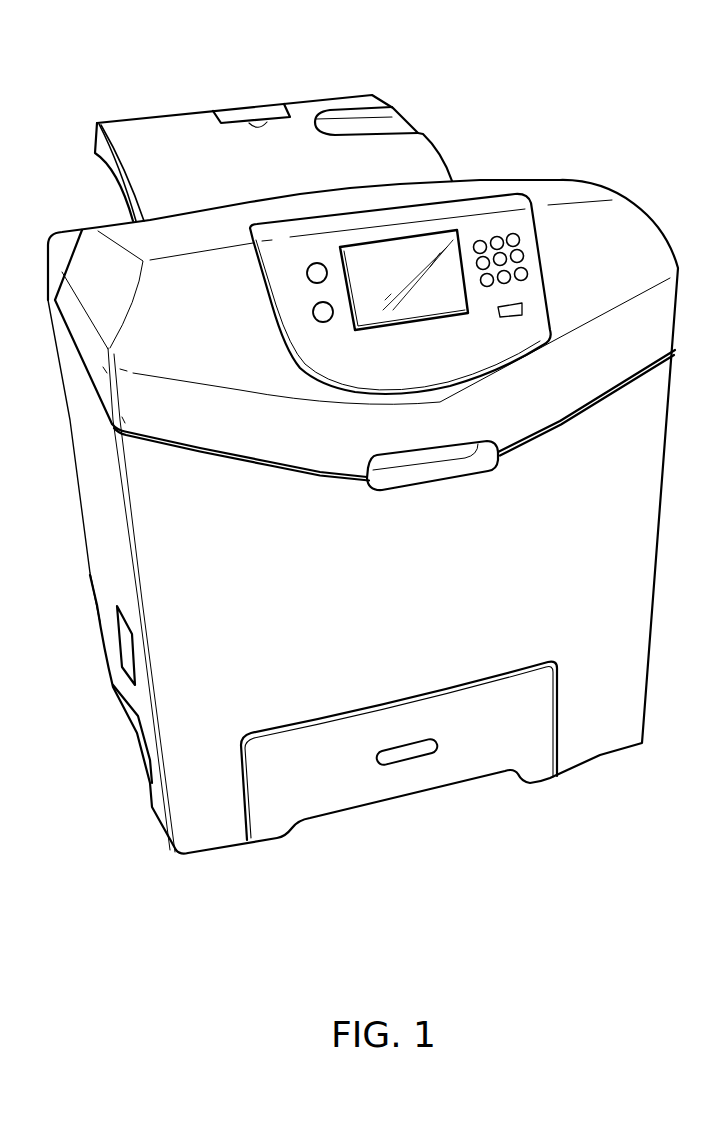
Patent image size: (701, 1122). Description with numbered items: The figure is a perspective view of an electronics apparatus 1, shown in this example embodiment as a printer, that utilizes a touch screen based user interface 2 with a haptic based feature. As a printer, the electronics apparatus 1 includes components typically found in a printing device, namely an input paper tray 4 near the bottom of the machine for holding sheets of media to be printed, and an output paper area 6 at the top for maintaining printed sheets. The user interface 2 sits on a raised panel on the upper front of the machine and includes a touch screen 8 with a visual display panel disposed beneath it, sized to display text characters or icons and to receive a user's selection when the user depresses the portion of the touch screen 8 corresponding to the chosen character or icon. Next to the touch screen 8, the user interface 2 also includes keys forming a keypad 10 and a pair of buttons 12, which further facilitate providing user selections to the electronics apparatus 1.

The electronics apparatus 1 is at (123, 48).
The user interface 2 is at (344, 352).
The input paper tray 4 is at (415, 772).
The output paper area 6 is at (446, 100).
The touch screen 8 is at (407, 247).
The keypad 10 is at (522, 220).
The buttons 12 is at (295, 263).